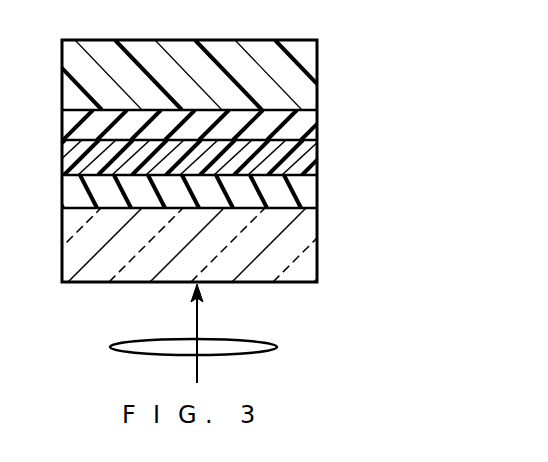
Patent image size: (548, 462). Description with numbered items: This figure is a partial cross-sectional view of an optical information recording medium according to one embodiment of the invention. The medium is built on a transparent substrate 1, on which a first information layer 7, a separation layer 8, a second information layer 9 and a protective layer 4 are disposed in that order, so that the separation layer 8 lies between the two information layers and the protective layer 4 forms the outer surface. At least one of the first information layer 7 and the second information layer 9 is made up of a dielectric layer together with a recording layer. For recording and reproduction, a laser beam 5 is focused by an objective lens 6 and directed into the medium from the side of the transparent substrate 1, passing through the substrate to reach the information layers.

The transparent substrate 1 is at (307, 247).
The first information layer 7 is at (310, 193).
The separation layer 8 is at (314, 162).
The second information layer 9 is at (314, 122).
The protective layer 4 is at (312, 70).
The laser beam 5 is at (197, 370).
The objective lens 6 is at (277, 347).